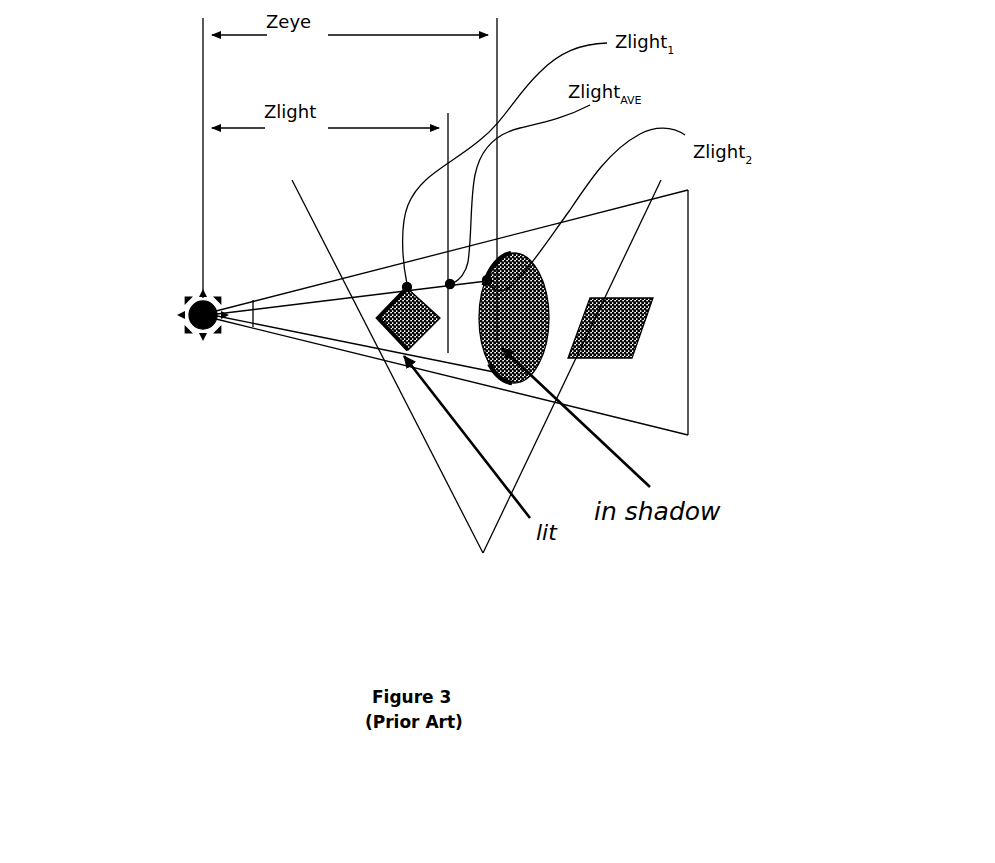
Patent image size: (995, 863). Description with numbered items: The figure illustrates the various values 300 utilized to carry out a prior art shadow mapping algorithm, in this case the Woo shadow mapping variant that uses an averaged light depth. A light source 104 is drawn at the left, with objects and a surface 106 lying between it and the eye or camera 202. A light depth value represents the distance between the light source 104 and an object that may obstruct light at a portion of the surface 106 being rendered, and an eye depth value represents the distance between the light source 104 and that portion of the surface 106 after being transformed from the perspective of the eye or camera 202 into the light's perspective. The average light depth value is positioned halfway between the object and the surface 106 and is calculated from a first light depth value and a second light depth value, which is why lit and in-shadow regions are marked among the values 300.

The light source 104 is at (172, 313).
The surface 106 is at (528, 310).
The eye or camera 202 is at (522, 609).
The various values 300 is at (720, 104).